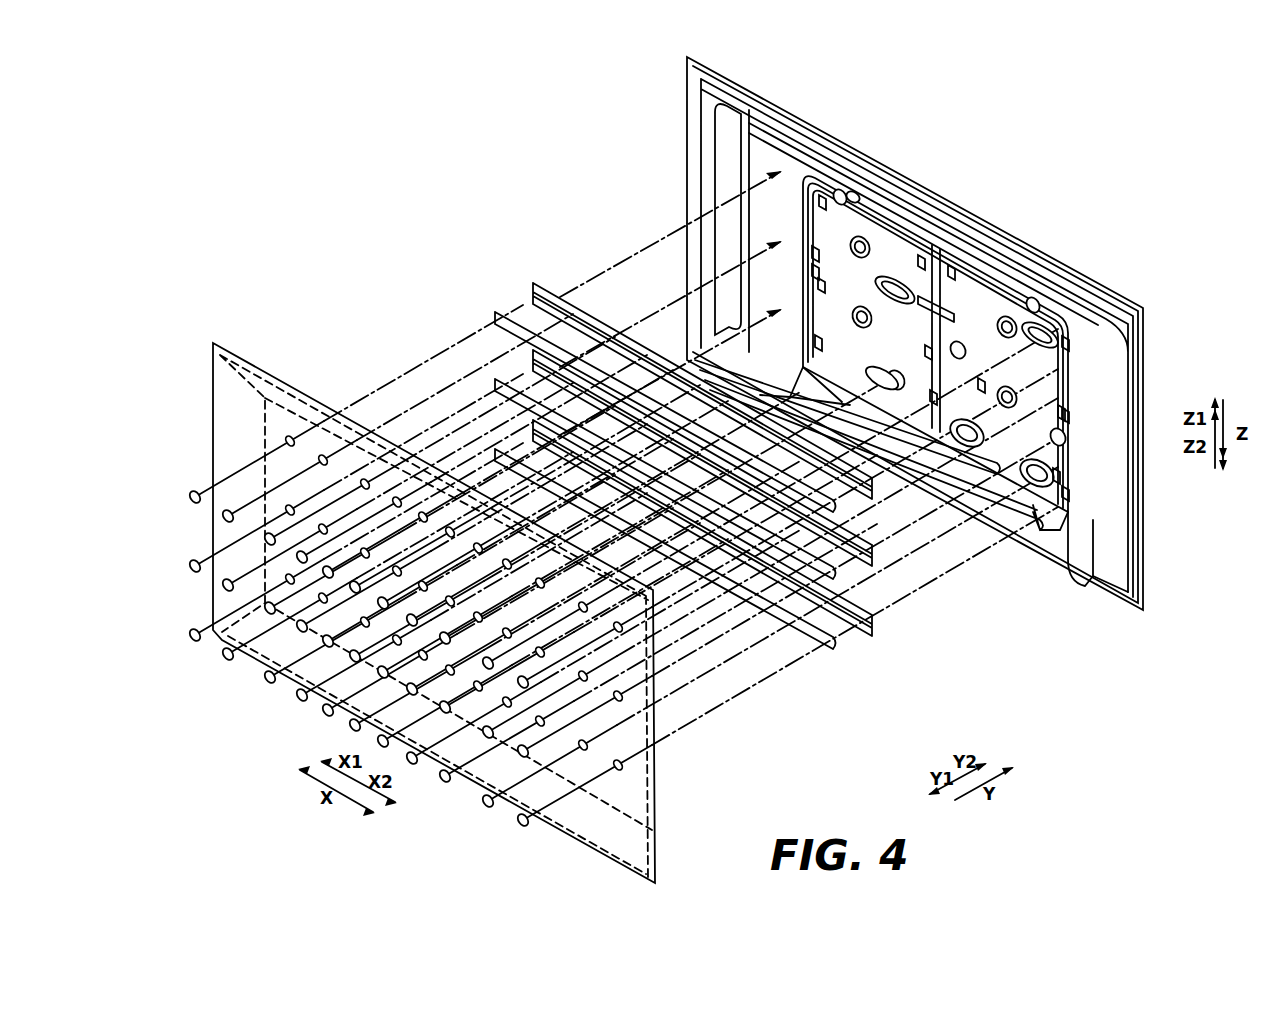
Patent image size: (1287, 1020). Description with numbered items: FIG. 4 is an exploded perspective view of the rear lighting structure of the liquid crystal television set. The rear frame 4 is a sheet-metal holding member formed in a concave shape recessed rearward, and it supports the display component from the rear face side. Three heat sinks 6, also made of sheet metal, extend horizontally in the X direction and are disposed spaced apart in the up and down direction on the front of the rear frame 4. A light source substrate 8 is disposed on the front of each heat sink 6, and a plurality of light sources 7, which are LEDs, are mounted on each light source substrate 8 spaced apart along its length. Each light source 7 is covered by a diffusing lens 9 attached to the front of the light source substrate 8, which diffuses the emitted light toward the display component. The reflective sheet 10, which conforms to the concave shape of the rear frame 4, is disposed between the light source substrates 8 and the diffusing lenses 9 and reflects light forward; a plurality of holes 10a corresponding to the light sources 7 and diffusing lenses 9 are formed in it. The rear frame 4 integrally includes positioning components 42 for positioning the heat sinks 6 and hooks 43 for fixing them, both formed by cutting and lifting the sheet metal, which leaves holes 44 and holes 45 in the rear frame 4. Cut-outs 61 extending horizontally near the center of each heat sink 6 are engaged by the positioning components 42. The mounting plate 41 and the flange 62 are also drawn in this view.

The rear frame 4 is at (1135, 302).
The mounting plate 41 is at (1060, 315).
The positioning component 42 is at (1069, 493).
The hook 43 is at (1036, 297).
The hole 44 is at (1054, 474).
The hole 45 is at (876, 348).
The heat sink 6 is at (698, 477).
The cut-out 61 is at (702, 459).
The rail flange 62 is at (764, 567).
The light source 7 is at (688, 491).
The light source substrate 8 is at (845, 645).
The diffusing lens 9 is at (519, 827).
The reflective sheet 10 is at (592, 852).
The hole 10a is at (618, 772).